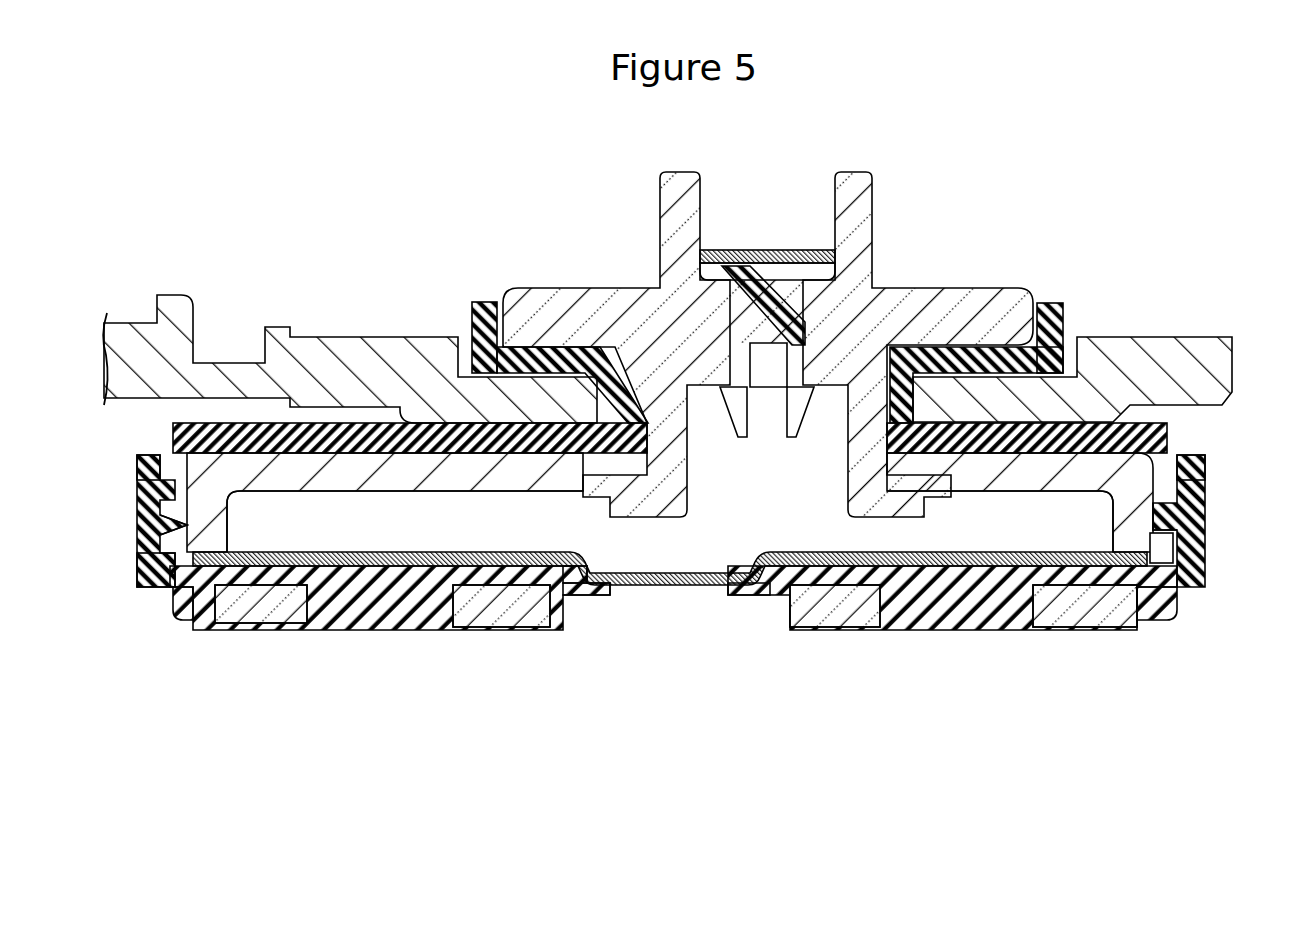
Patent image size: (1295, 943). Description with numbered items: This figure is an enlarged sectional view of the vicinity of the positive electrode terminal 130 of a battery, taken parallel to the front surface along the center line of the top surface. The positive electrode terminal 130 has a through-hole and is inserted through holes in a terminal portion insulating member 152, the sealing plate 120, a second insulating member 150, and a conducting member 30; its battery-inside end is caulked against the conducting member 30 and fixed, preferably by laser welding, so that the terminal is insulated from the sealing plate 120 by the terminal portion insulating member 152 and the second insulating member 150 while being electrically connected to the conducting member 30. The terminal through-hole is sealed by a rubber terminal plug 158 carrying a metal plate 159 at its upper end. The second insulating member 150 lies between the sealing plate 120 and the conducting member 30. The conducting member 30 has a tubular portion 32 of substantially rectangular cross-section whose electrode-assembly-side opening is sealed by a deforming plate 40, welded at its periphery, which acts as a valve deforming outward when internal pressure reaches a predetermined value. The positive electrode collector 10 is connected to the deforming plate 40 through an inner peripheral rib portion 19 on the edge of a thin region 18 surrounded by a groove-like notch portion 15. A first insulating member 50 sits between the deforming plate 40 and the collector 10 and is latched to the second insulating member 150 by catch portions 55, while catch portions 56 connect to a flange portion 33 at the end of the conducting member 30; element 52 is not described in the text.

The positive electrode collector 10 is at (260, 612).
The notch portion 15 is at (575, 590).
The thin region 18 is at (598, 598).
The inner peripheral rib portion 19 is at (740, 598).
The conducting member 30 is at (336, 470).
The tubular portion 32 is at (232, 520).
The flange portion 33 is at (145, 560).
The deforming plate 40 is at (395, 600).
The first insulating member 50 is at (150, 500).
The foot 52 is at (185, 600).
The catch portions 55 is at (142, 458).
The catch portions 56 is at (165, 522).
The sealing plate 120 is at (385, 345).
The positive electrode terminal 130 is at (565, 290).
The second insulating member 150 is at (245, 420).
The terminal portion insulating member 152 is at (485, 310).
The terminal plug 158 is at (745, 272).
The metal plate 159 is at (795, 250).